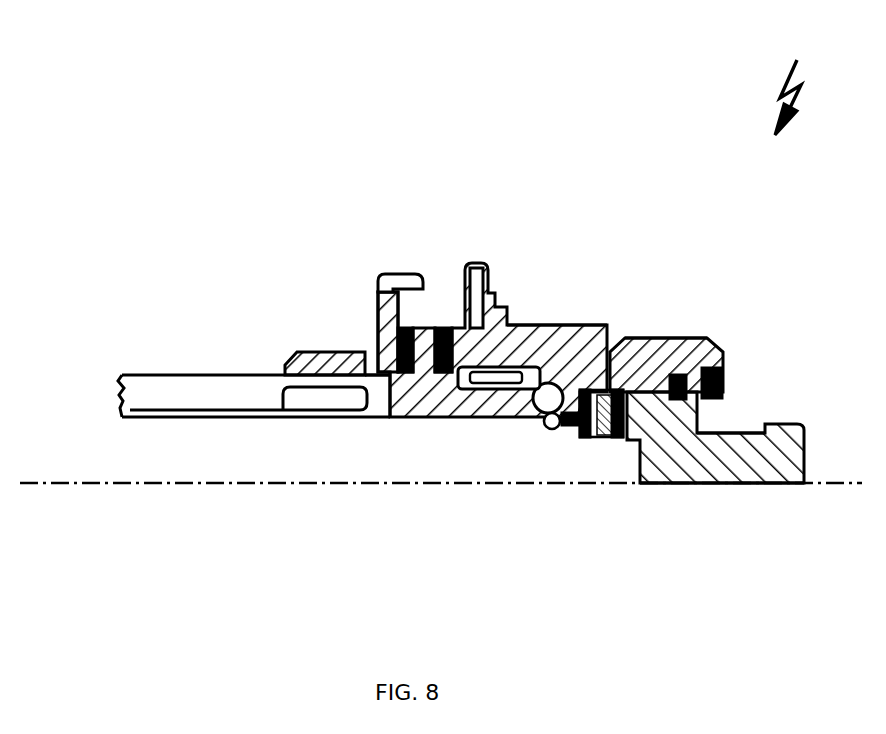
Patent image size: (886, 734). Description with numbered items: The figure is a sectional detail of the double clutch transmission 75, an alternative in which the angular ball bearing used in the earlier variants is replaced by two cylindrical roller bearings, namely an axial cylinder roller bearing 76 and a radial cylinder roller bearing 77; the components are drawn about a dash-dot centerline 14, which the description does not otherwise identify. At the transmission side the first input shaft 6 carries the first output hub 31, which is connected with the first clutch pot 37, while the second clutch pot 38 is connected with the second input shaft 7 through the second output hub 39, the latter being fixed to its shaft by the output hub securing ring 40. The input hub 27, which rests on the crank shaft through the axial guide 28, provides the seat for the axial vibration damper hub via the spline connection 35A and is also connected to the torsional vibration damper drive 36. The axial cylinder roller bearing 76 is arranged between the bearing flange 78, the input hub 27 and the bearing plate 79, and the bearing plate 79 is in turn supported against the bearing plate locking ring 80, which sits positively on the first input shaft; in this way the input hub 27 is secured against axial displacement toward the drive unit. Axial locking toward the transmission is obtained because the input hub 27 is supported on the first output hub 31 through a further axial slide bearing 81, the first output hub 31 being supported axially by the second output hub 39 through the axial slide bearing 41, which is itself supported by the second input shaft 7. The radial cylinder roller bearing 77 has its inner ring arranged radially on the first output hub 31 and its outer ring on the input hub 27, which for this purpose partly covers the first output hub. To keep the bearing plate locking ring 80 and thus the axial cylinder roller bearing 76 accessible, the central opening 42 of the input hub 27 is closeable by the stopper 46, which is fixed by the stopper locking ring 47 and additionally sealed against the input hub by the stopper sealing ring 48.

The first input shaft 6 is at (206, 458).
The second input shaft 7 is at (172, 392).
The axis of rotation 14 is at (67, 484).
The input hub 27 is at (503, 322).
The axial guide 28 is at (789, 424).
The first output hub 31 is at (402, 420).
The spline connection 35A is at (660, 336).
The torsional vibration damper drive 36 is at (484, 262).
The first clutch pot 37 is at (436, 328).
The second clutch pot 38 is at (425, 275).
The second output hub 39 is at (302, 372).
The output hub securing ring 40 is at (374, 405).
The axial slide bearing 41 is at (388, 338).
The central opening 42 is at (712, 455).
The stopper 46 is at (760, 457).
The stopper locking ring 47 is at (740, 345).
The stopper sealing ring 48 is at (678, 338).
The double clutch transmission 75 is at (811, 80).
The axial cylinder roller bearing 76 is at (570, 438).
The radial cylinder roller bearing 77 is at (483, 418).
The bearing flange 78 is at (542, 432).
The bearing plate 79 is at (590, 440).
The bearing plate locking ring 80 is at (616, 438).
The axial slide bearing 81 is at (449, 328).